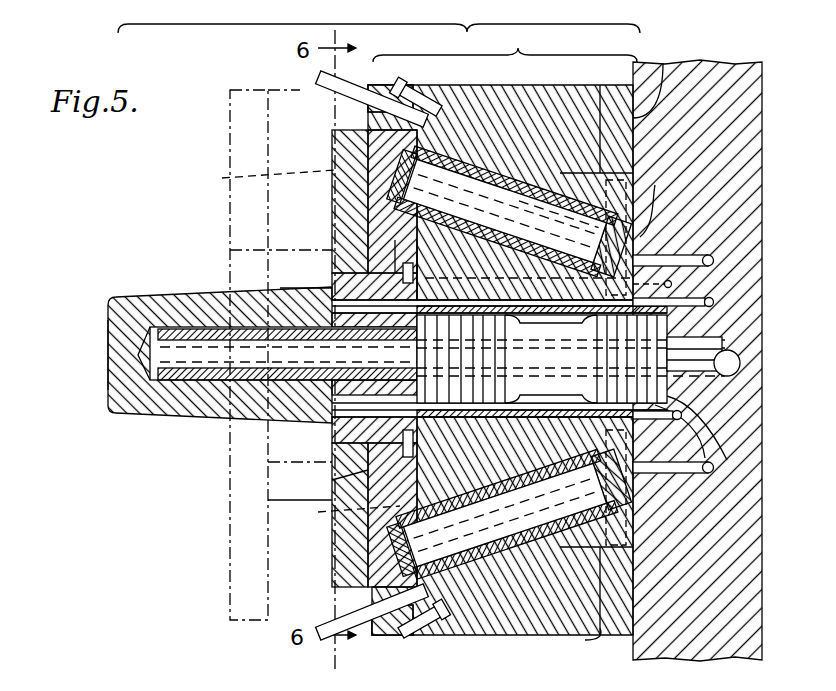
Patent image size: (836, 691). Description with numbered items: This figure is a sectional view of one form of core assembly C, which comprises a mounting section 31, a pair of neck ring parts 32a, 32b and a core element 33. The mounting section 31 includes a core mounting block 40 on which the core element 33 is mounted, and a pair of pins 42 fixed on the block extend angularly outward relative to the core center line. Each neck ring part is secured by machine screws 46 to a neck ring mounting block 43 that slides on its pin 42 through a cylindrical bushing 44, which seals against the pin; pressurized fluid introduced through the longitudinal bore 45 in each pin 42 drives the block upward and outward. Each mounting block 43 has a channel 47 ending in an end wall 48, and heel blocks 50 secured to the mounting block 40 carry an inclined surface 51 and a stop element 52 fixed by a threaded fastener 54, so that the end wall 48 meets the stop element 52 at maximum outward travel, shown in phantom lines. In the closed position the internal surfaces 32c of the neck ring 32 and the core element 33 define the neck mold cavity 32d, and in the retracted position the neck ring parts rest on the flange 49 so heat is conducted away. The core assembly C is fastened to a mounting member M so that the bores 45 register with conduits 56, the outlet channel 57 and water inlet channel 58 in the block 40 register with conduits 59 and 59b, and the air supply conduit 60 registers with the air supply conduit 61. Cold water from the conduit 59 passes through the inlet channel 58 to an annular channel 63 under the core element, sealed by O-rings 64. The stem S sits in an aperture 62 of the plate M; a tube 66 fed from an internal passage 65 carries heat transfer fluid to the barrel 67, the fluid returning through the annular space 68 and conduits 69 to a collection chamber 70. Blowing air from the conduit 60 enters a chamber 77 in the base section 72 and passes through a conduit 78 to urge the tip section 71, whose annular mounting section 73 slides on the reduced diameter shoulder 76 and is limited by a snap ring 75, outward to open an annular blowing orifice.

The mounting section 31 is at (379, 39).
The neck ring 32 is at (335, 148).
The neck ring part 32a is at (290, 232).
The neck ring part 32b is at (270, 500).
The internal surface 32c is at (232, 250).
The neck mold cavity 32d is at (332, 460).
The core element 33 is at (100, 372).
The core mounting block 40 is at (522, 470).
The pin 42 is at (583, 650).
The neck ring mounting block 43 is at (318, 94).
The cylindrical bushing 44 is at (482, 118).
The longitudinal bore 45 is at (610, 96).
The machine screw 46 is at (293, 344).
The channel 47 is at (500, 138).
The end wall 48 is at (540, 132).
The flange 49 is at (332, 480).
The heel block 50 is at (652, 90).
The inclined surface 51 is at (446, 98).
The stop element 52 is at (368, 90).
The threaded fastener 54 is at (413, 82).
The conduit 56 is at (706, 256).
The outlet channel 57 is at (522, 272).
The water inlet channel 58 is at (470, 450).
The conduit 59 is at (650, 425).
The conduit 59b is at (672, 284).
The air supply conduit 60 is at (470, 278).
The air supply conduit 61 is at (714, 302).
The aperture 62 is at (712, 468).
The annular channel 63 is at (345, 236).
The O-ring 64 is at (355, 240).
The internal passage 65 is at (727, 377).
The tube 66 is at (702, 342).
The barrel 67 is at (165, 378).
The annular space 68 is at (186, 382).
The conduit 69 is at (546, 372).
The collection chamber 70 is at (704, 408).
The tip section 71 is at (165, 292).
The base section 72 is at (300, 432).
The annular mounting section 73 is at (285, 418).
The snap ring 75 is at (428, 432).
The reduced diameter shoulder 76 is at (282, 290).
The chamber 77 is at (345, 292).
The conduit 78 is at (300, 292).
The core assembly C is at (505, 47).
The mounting member M is at (740, 78).
The stem S is at (714, 432).